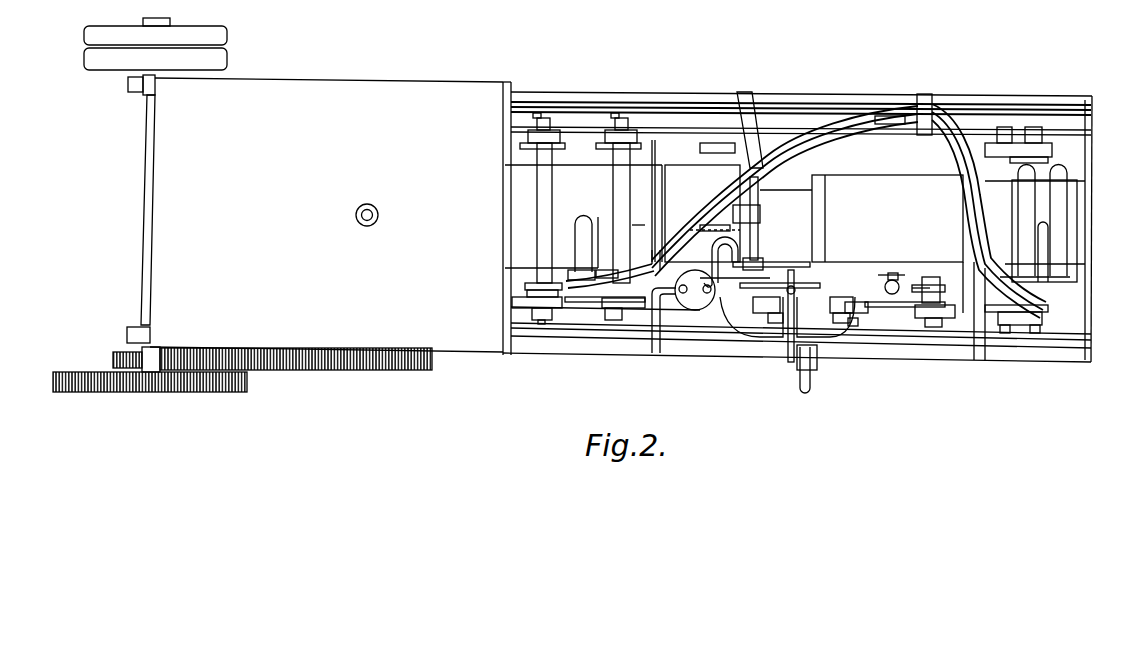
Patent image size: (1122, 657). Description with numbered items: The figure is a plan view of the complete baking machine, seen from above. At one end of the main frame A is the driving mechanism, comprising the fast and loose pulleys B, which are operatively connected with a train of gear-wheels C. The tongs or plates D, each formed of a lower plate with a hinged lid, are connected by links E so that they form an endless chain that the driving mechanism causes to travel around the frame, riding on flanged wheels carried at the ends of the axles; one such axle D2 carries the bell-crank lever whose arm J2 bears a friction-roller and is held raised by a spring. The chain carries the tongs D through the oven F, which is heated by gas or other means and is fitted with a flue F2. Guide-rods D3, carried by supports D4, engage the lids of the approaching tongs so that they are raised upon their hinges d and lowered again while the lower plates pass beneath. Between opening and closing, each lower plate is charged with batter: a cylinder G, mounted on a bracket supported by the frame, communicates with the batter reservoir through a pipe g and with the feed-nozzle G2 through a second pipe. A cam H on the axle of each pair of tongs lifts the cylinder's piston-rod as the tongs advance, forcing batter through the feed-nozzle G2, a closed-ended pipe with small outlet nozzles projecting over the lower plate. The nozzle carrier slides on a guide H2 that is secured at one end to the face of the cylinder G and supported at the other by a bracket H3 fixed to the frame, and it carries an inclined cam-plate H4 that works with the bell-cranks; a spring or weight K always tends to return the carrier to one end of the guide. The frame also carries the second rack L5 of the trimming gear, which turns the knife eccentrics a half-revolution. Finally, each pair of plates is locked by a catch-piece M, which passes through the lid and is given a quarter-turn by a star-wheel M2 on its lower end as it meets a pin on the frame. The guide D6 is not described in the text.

The main frame A is at (590, 93).
The fast and loose pulleys B is at (217, 42).
The train of gear-wheels C is at (133, 383).
The tongs or plates D is at (542, 150).
The axle D2 is at (946, 289).
The guide-rods D3 is at (925, 103).
The supports D4 is at (785, 106).
The guide D6 is at (638, 215).
The hinges d is at (547, 167).
The links E is at (678, 128).
The oven F is at (330, 216).
The flue F2 is at (374, 224).
The cylinder G is at (692, 307).
The feed-nozzle G2 is at (760, 190).
The pipe g is at (648, 310).
The cam H is at (850, 295).
The guide H2 is at (793, 264).
The bracket H3 is at (783, 360).
The inclined cam-plate H4 is at (832, 280).
The arm J2 is at (905, 270).
The spring or weight K is at (805, 393).
The second rack L5 is at (762, 217).
The catch-piece M is at (587, 272).
The star-wheel M2 is at (890, 275).